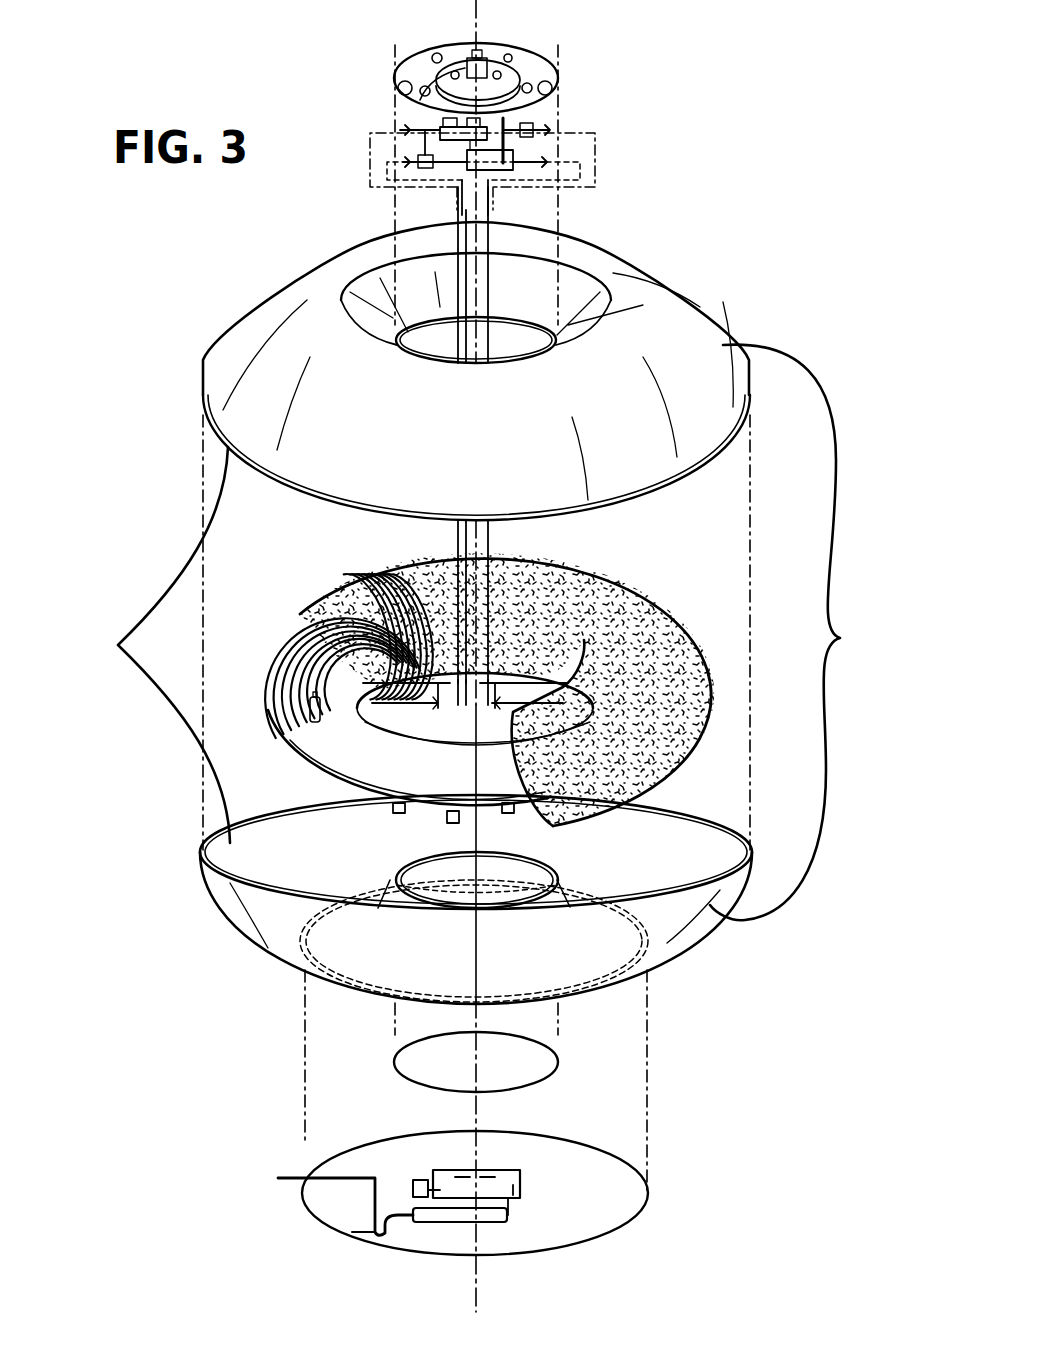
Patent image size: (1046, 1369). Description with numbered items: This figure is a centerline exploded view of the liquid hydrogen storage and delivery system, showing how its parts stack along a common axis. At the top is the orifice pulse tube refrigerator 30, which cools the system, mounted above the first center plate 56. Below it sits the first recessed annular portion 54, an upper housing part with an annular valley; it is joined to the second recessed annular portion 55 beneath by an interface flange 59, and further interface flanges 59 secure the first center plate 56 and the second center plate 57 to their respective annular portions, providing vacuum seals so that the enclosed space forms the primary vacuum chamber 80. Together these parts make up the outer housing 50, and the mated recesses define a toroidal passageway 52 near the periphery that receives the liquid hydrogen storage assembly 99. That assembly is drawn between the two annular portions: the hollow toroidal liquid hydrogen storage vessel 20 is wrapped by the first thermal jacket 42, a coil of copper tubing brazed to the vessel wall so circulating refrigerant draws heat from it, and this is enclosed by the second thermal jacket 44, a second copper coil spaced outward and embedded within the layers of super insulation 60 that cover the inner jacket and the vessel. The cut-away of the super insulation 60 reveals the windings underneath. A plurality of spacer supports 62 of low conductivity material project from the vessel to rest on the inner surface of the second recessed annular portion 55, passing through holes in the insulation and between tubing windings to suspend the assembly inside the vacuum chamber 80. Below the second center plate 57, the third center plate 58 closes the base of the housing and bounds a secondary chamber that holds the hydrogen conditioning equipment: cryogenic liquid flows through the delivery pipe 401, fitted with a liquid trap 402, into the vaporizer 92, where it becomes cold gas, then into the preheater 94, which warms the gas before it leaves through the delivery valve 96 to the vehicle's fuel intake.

The liquid hydrogen storage vessel 20 is at (353, 767).
The orifice pulse tube refrigerator 30 is at (587, 106).
The first thermal jacket 42 is at (288, 690).
The second thermal jacket 44 is at (378, 597).
The outer housing 50 is at (799, 633).
The toroidal passageway 52 is at (153, 645).
The first recessed annular portion 54 is at (256, 312).
The second recessed annular portion 55 is at (265, 943).
The first center plate 56 is at (415, 103).
The second center plate 57 is at (527, 1074).
The third center plate 58 is at (610, 1200).
The interface flange 59 is at (518, 322).
The super insulation 60 is at (420, 562).
The spacer supports 62 is at (448, 820).
The primary vacuum chamber 80 is at (323, 882).
The vaporizer 92 is at (455, 1222).
The preheater 94 is at (523, 1180).
The delivery valve 96 is at (419, 1180).
The liquid hydrogen storage assembly 99 is at (682, 641).
The delivery pipe 401 is at (333, 1178).
The liquid trap 402 is at (352, 1232).